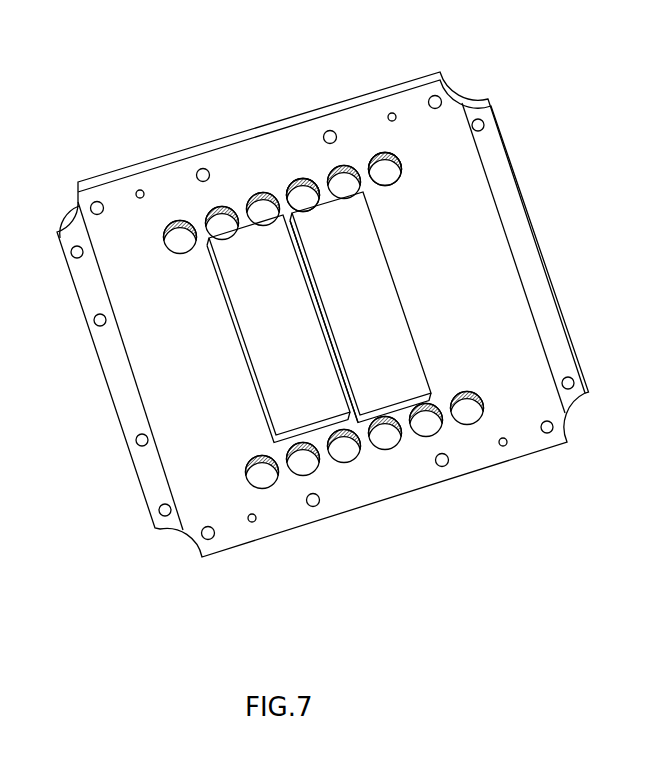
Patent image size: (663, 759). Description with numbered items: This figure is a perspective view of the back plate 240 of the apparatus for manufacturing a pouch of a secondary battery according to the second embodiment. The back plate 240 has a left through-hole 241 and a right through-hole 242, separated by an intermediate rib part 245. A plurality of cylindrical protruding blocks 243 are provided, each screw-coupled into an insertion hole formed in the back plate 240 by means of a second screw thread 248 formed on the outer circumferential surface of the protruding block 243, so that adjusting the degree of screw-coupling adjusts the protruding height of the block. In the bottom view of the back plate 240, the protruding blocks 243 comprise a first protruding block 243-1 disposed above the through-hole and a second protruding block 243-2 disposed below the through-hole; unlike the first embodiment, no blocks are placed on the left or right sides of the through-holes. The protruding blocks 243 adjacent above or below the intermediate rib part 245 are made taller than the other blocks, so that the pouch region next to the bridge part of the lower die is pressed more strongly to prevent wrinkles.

The back plate 240 is at (107, 87).
The left through-hole 241 is at (290, 333).
The right through-hole 242 is at (368, 320).
The protruding block 243 is at (298, 162).
The first protruding block 243-1 is at (262, 202).
The second protruding block 243-2 is at (384, 444).
The intermediate rib part 245 is at (331, 344).
The second screw thread 248 is at (393, 152).